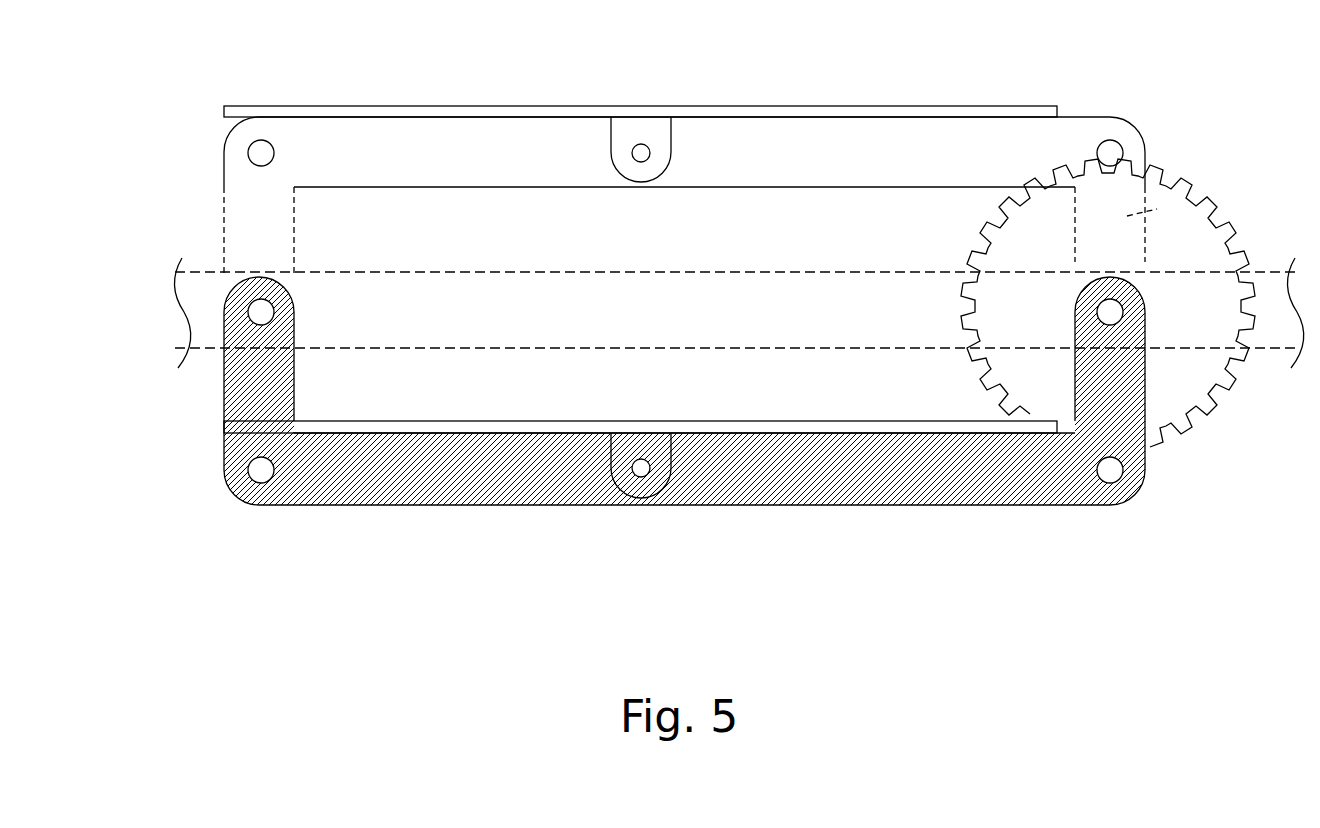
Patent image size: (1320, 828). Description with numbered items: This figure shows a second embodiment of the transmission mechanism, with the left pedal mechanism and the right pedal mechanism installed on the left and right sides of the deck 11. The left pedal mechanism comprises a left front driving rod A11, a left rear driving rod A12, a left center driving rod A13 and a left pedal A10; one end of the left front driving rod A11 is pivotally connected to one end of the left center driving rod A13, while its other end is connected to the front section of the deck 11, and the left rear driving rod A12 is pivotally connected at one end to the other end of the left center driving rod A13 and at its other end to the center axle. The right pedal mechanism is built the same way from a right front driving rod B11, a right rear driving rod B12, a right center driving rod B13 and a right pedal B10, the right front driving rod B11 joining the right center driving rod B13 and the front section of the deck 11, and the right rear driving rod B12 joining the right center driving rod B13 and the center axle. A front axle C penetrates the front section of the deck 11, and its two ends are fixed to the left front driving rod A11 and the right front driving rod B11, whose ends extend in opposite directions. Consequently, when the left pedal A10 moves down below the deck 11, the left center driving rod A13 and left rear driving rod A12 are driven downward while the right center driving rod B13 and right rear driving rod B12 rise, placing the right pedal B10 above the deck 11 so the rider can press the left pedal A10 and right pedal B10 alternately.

The right pedal B10 is at (493, 107).
The right front driving rod B11 is at (250, 196).
The right rear driving rod B12 is at (1175, 193).
The right center driving rod B13 is at (808, 138).
The left pedal A10 is at (446, 432).
The left front driving rod A11 is at (228, 403).
The left rear driving rod A12 is at (1146, 408).
The left center driving rod A13 is at (955, 486).
The front axle C is at (232, 305).
The deck 11 is at (185, 333).